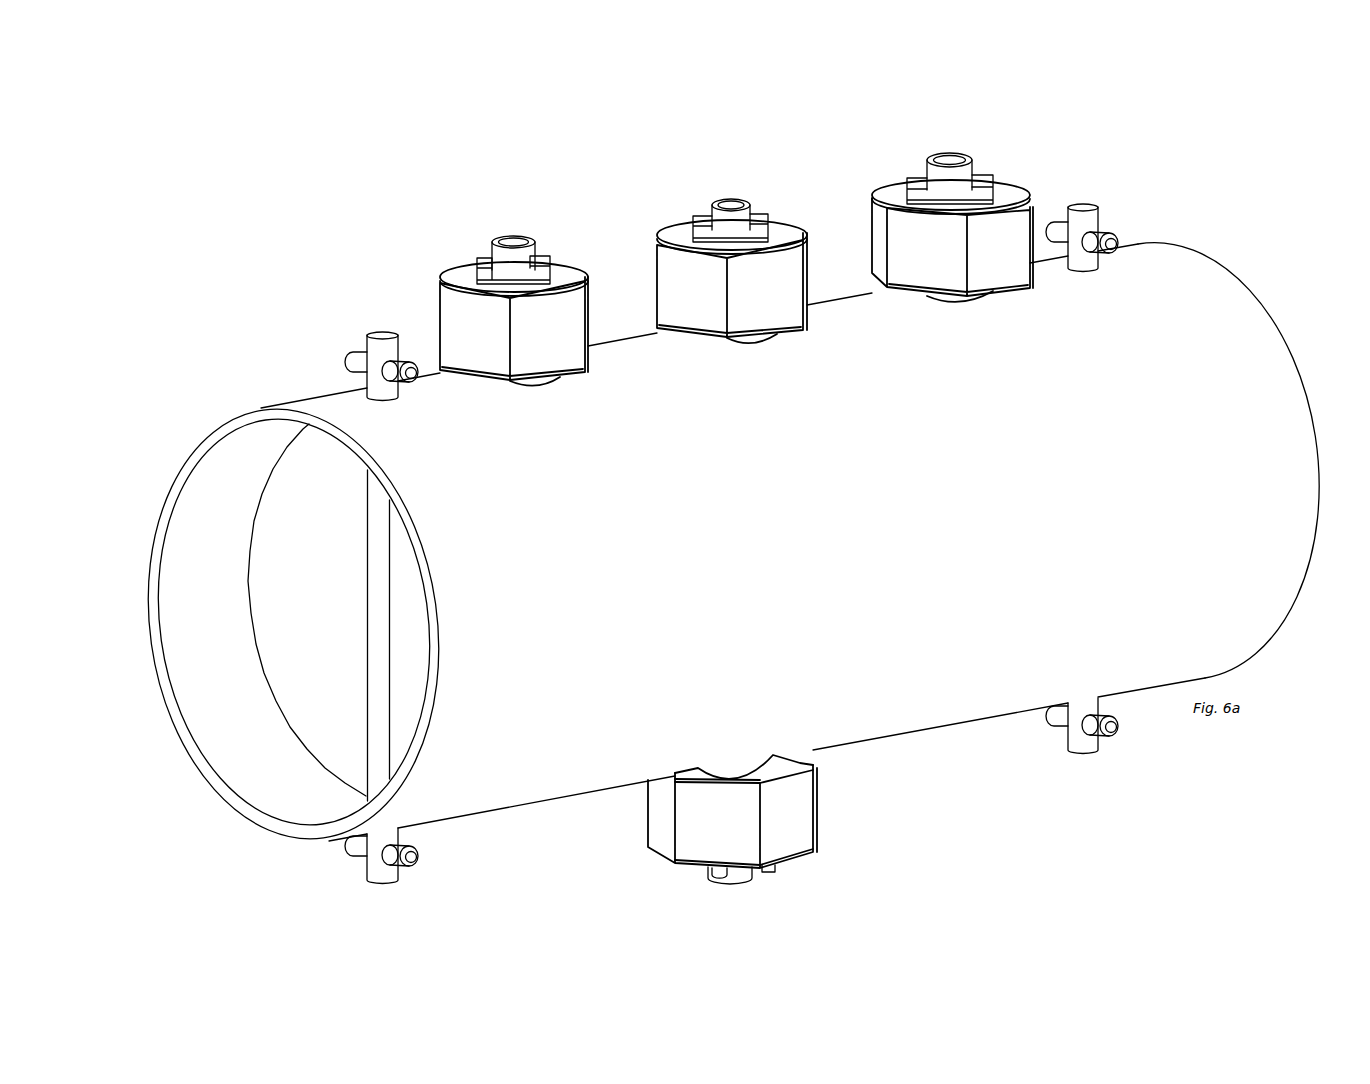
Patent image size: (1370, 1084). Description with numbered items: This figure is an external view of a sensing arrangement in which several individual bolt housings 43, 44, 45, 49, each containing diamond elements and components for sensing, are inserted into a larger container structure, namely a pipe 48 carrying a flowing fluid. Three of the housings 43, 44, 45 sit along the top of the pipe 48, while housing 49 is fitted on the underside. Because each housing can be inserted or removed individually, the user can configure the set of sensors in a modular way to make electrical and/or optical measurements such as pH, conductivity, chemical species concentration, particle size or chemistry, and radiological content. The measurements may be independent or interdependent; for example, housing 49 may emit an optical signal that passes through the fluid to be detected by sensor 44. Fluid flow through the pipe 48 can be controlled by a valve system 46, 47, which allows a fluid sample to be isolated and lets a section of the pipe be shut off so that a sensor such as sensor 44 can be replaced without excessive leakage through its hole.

The bolt housing 43 is at (462, 315).
The bolt housing 44 is at (687, 277).
The bolt housing 45 is at (925, 237).
The valve system 46 is at (1093, 208).
The valve system 47 is at (292, 565).
The pipe 48 is at (1220, 423).
The bolt housing 49 is at (782, 832).